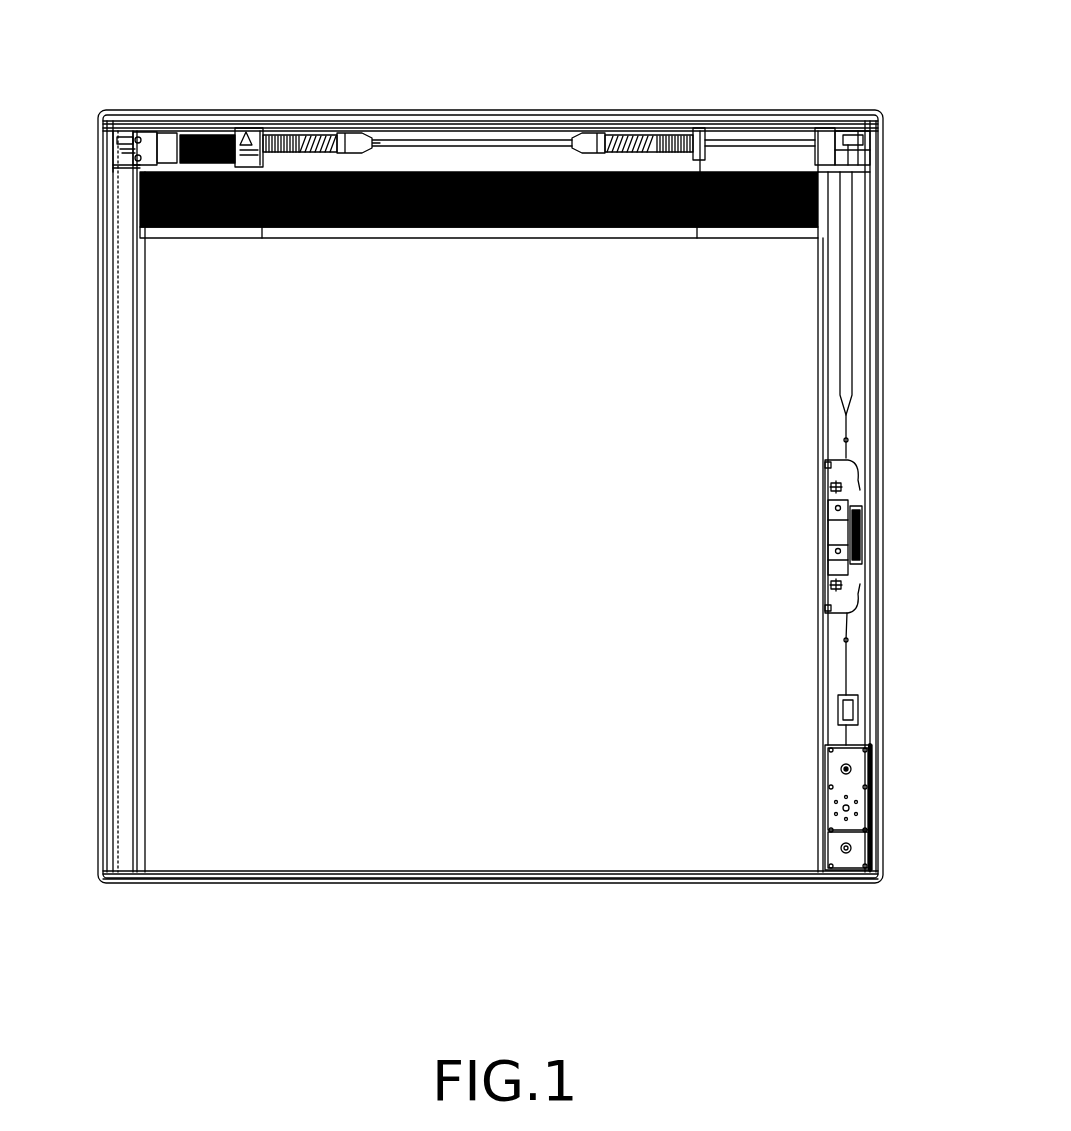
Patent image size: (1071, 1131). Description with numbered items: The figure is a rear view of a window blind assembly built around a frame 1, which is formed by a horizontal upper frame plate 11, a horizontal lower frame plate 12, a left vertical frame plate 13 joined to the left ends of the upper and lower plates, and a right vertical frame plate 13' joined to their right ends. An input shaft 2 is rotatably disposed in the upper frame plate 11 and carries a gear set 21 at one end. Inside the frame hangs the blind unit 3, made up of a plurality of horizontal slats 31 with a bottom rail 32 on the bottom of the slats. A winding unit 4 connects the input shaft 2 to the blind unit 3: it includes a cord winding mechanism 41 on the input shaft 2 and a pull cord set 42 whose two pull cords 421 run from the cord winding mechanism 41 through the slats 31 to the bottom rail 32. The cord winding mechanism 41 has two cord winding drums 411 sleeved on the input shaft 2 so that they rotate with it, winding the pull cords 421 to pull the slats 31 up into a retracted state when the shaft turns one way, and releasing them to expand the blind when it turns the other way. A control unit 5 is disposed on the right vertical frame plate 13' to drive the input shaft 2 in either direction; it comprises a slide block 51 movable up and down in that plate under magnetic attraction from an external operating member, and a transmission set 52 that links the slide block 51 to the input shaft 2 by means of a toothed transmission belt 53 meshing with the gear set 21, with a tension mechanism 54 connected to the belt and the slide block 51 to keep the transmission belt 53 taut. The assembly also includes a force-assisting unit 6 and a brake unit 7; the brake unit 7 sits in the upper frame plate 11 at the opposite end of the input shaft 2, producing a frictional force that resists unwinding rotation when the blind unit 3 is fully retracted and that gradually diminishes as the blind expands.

The frame 1 is at (739, 110).
The horizontal upper frame plate 11 is at (692, 117).
The horizontal lower frame plate 12 is at (605, 875).
The left vertical frame plate 13 is at (105, 496).
The right vertical frame plate 13' is at (881, 496).
The input shaft 2 is at (777, 131).
The gear set 21 is at (855, 137).
The blind unit 3 is at (437, 267).
The slats 31 is at (137, 190).
The bottom rail 32 is at (233, 232).
The winding unit 4 is at (524, 80).
The cord winding mechanism 41 is at (360, 135).
The cord winding drums 411 is at (600, 133).
The pull cord set 42 is at (305, 137).
The pull cords 421 is at (640, 132).
The control unit 5 is at (886, 602).
The slide block 51 is at (857, 612).
The transmission set 52 is at (899, 458).
The transmission belt 53 is at (848, 285).
The tension mechanism 54 is at (863, 533).
The force-assisting unit 6 is at (873, 770).
The brake unit 7 is at (182, 128).